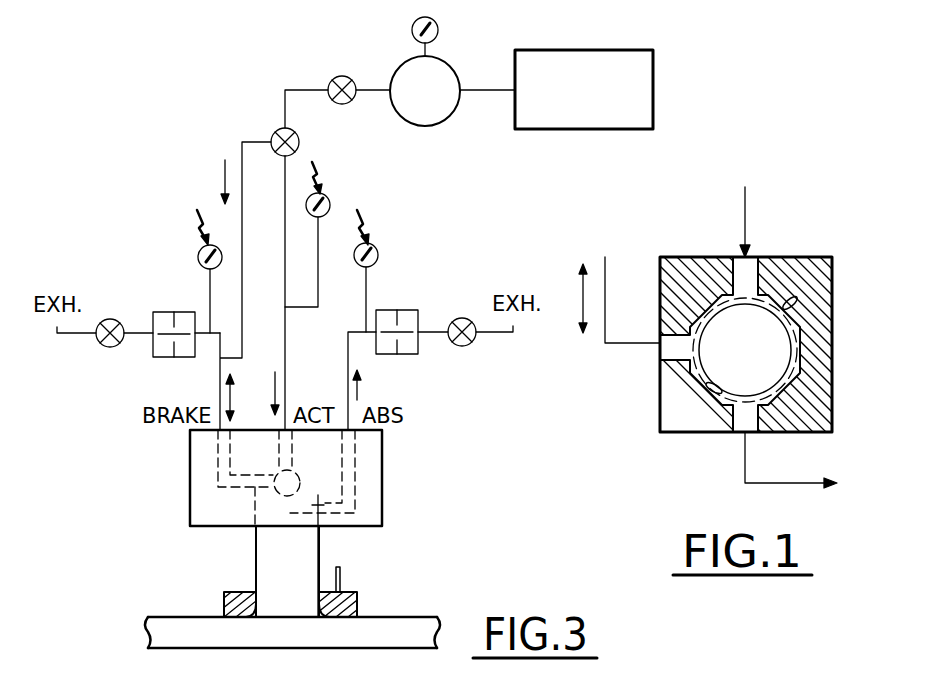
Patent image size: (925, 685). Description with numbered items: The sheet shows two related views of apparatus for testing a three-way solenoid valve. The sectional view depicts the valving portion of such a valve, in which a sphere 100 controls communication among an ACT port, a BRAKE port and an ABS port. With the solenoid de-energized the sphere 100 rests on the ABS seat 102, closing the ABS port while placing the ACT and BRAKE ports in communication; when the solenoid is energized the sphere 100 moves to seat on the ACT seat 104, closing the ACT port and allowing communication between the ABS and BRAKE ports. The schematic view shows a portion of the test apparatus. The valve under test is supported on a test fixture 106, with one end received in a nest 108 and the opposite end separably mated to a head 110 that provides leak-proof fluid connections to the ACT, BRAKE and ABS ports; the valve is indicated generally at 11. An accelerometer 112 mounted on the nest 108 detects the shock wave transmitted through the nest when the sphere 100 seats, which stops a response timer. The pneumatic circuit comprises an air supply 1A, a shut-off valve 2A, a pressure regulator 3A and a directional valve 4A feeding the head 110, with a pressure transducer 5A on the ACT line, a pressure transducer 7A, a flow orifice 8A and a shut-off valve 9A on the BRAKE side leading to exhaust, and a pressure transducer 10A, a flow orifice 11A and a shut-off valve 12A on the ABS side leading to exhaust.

In FIG. 3, the air supply 1A is at (584, 50).
In FIG. 3, the shut-off valve 2A is at (337, 78).
In FIG. 3, the pressure regulator 3A is at (455, 72).
In FIG. 3, the directional valve 4A is at (275, 130).
In FIG. 3, the pressure transducer 5A is at (326, 194).
In FIG. 3, the pressure transducer 7A is at (200, 250).
In FIG. 3, the flow orifice 8A is at (165, 311).
In FIG. 3, the shut-off valve 9A is at (105, 348).
In FIG. 3, the pressure transducer 10A is at (378, 250).
In FIG. 3, the flow orifice 11A is at (402, 310).
In FIG. 3, the shut-off valve 12A is at (465, 346).
In FIG. 3, the head 110 is at (383, 482).
In FIG. 3, the cylinder 11 is at (256, 556).
In FIG. 3, the nest 108 is at (224, 600).
In FIG. 3, the accelerometer 112 is at (344, 580).
In FIG. 3, the test fixture 106 is at (412, 617).
In FIG. 1, the sphere 100 is at (770, 400).
In FIG. 1, the ABS seat 102 is at (712, 390).
In FIG. 1, the ACT seat 104 is at (800, 305).